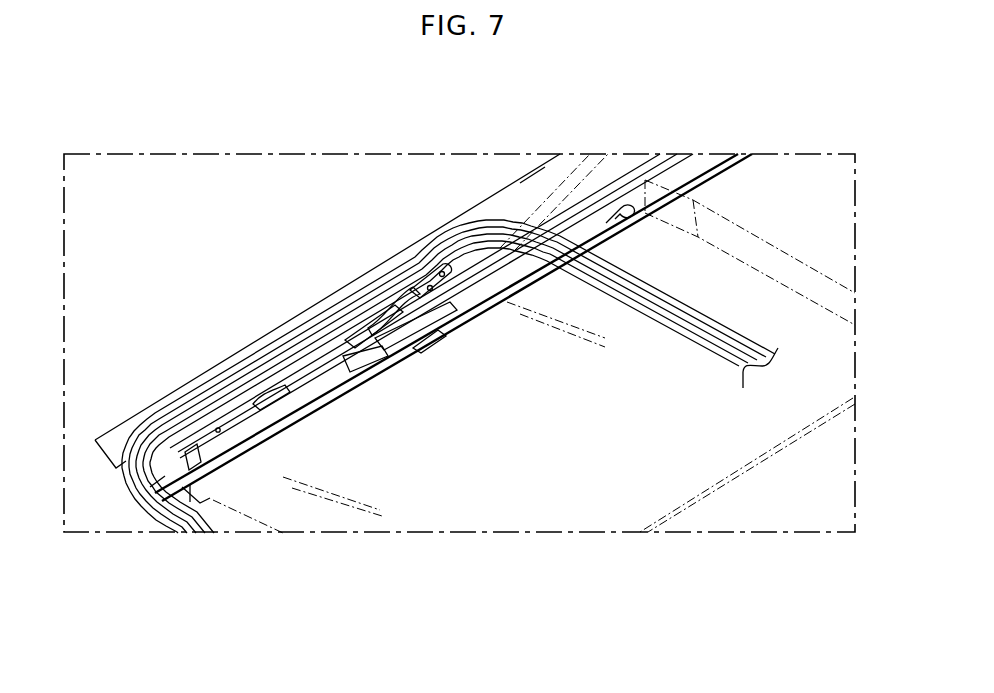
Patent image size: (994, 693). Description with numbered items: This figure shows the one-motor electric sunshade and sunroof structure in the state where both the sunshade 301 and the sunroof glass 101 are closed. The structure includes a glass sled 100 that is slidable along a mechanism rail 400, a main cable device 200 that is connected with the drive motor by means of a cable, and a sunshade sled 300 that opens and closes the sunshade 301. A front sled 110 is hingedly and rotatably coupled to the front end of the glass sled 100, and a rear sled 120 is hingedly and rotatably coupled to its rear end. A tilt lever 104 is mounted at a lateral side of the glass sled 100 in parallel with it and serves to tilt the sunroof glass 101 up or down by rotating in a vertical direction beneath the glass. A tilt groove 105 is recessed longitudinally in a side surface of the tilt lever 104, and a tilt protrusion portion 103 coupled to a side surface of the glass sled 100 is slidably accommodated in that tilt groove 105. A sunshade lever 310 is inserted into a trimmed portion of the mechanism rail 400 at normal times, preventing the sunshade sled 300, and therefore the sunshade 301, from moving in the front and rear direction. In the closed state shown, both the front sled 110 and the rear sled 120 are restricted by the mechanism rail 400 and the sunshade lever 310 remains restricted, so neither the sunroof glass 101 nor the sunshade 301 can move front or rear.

The glass sled 100 is at (490, 280).
The sunroof glass 101 is at (295, 512).
The tilt protrusion portion 103 is at (410, 322).
The tilt lever 104 is at (342, 338).
The tilt groove 105 is at (372, 320).
The front sled 110 is at (323, 368).
The rear sled 120 is at (605, 210).
The main cable device 200 is at (362, 372).
The sunshade sled 300 is at (402, 368).
The sunshade 301 is at (747, 248).
The sunshade lever 310 is at (418, 350).
The mechanism rail 400 is at (538, 165).